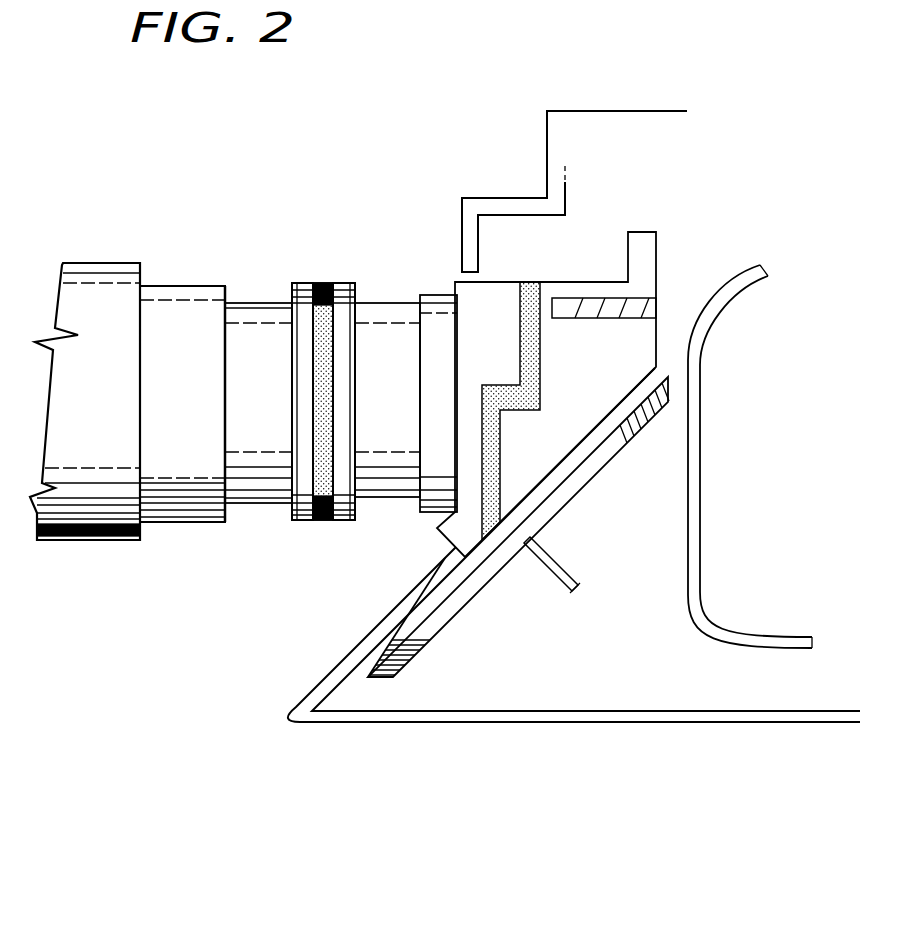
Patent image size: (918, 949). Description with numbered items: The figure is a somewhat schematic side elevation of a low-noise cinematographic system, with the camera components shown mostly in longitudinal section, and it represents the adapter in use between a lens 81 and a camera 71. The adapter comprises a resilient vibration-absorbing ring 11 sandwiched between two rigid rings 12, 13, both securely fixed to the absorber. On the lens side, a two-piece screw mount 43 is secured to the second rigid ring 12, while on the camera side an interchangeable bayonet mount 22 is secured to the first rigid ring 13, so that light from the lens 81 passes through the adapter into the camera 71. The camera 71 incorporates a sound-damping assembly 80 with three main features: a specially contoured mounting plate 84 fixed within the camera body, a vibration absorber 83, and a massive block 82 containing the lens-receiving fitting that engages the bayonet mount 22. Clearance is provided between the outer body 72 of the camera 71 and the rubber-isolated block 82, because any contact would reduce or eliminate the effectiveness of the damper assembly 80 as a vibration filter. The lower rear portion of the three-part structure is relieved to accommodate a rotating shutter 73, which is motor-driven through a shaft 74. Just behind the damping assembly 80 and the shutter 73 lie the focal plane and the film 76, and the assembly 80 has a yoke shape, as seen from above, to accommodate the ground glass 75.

The resilient vibration-absorbing ring 11 is at (318, 521).
The second rigid ring 12 is at (298, 518).
The first rigid ring 13 is at (343, 521).
The bayonet mount 22 is at (442, 438).
The two-piece screw mount 43 is at (265, 370).
The camera 71 is at (310, 680).
The outer body 72 is at (509, 200).
The rotating shutter 73 is at (585, 478).
The shaft 74 is at (556, 562).
The ground glass 75 is at (597, 298).
The film 76 is at (712, 317).
The sound-damping assembly 80 is at (554, 270).
The lens 81 is at (84, 542).
The massive block 82 is at (505, 343).
The vibration absorber 83 is at (543, 337).
The mounting plate 84 is at (610, 384).